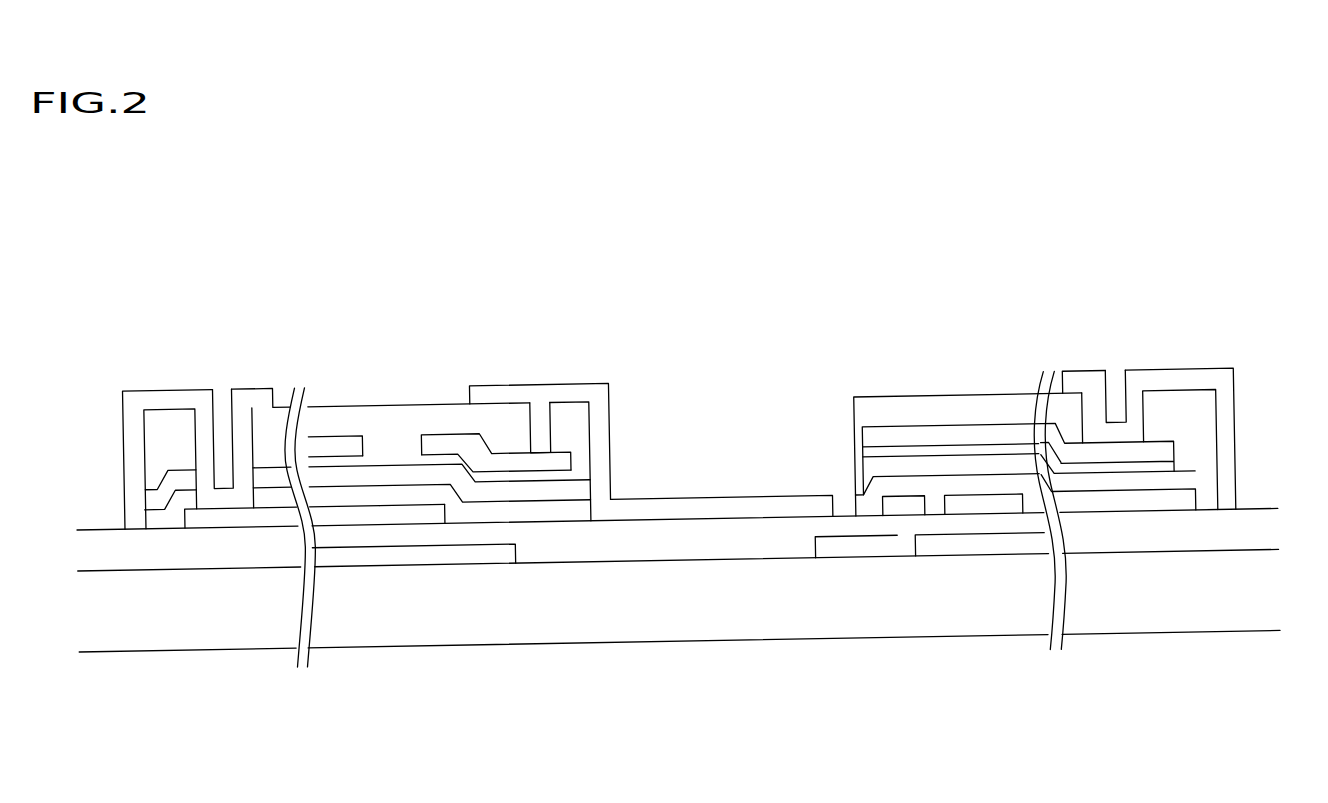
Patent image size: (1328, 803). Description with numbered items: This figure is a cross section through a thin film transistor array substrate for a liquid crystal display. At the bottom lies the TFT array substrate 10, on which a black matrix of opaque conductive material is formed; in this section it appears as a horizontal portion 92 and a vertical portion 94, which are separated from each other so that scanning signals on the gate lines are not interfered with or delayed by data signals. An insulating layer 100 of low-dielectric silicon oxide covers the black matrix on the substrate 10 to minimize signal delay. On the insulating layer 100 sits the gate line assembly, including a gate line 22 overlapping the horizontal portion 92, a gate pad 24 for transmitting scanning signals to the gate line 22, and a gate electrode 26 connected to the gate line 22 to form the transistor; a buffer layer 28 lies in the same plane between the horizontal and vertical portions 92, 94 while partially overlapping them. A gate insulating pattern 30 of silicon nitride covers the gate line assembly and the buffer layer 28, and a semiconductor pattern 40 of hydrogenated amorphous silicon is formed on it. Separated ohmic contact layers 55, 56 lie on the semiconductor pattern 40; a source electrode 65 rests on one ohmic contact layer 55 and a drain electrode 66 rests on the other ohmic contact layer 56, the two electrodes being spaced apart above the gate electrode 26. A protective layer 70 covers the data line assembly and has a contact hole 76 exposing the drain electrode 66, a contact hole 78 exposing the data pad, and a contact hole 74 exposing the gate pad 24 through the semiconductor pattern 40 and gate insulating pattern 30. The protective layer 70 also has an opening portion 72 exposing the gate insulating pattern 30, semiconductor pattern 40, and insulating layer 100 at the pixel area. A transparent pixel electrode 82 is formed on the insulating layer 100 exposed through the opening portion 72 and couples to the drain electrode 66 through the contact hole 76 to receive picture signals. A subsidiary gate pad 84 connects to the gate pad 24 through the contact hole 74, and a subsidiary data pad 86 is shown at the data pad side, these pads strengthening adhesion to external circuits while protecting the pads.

The TFT array substrate 10 is at (576, 637).
The gate line 22 is at (338, 525).
The gate pad 24 is at (222, 523).
The gate electrode 26 is at (418, 526).
The buffer layer 28 is at (903, 520).
The gate insulating pattern 30 is at (157, 519).
The semiconductor pattern 40 is at (157, 501).
The ohmic contact layer 55 is at (319, 466).
The ohmic contact layer 56 is at (456, 467).
The source electrode 65 is at (356, 450).
The drain electrode 66 is at (435, 448).
The protective layer 70 is at (160, 421).
The opening portion 72 is at (748, 489).
The contact hole 74 is at (225, 400).
The contact hole 76 is at (543, 418).
The contact hole 78 is at (1112, 397).
The pixel electrode 82 is at (499, 400).
The subsidiary gate pad 84 is at (177, 400).
The subsidiary data pad 86 is at (1168, 400).
The horizontal portion 92 is at (483, 560).
The vertical portion 94 is at (855, 557).
The insulating layer 100 is at (695, 559).